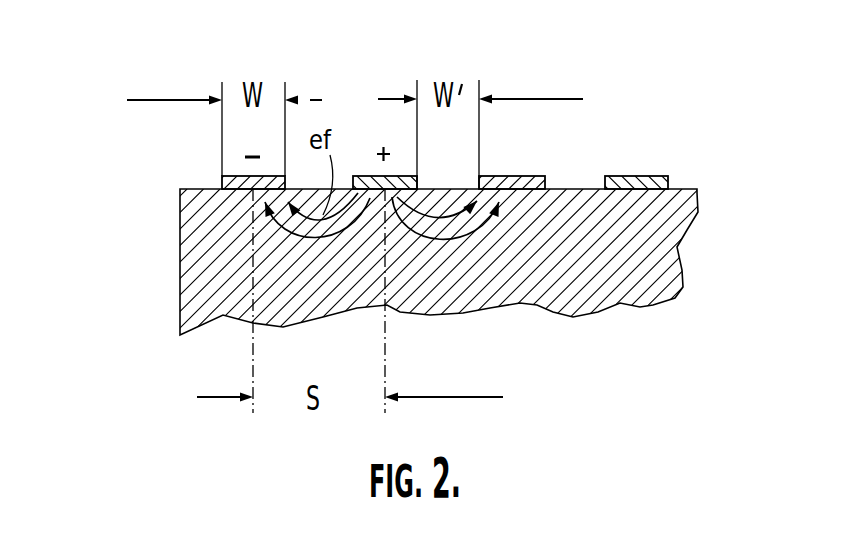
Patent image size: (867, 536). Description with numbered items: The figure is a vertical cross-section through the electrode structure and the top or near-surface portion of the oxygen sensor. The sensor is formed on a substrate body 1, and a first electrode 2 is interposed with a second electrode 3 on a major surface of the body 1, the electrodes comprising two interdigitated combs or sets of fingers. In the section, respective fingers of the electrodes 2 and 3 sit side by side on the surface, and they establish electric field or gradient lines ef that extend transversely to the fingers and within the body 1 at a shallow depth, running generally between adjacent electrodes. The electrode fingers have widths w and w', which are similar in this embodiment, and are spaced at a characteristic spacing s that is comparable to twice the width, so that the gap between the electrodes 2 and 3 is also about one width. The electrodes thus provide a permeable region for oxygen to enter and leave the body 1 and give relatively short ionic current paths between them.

The substrate body 1 is at (192, 308).
The first electrode 2 is at (222, 176).
The second electrode 3 is at (365, 177).